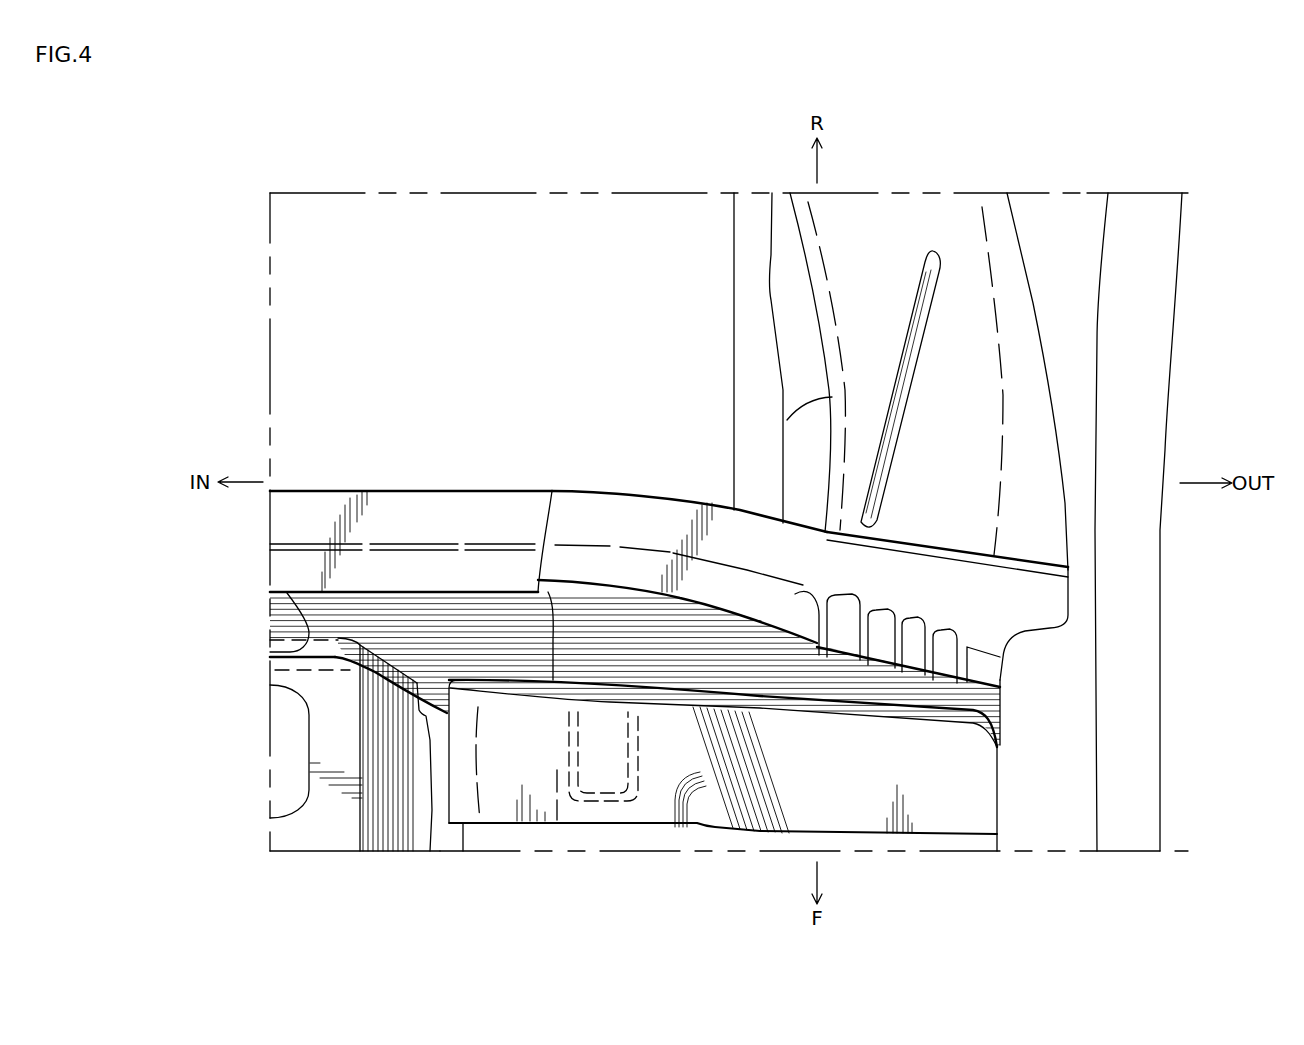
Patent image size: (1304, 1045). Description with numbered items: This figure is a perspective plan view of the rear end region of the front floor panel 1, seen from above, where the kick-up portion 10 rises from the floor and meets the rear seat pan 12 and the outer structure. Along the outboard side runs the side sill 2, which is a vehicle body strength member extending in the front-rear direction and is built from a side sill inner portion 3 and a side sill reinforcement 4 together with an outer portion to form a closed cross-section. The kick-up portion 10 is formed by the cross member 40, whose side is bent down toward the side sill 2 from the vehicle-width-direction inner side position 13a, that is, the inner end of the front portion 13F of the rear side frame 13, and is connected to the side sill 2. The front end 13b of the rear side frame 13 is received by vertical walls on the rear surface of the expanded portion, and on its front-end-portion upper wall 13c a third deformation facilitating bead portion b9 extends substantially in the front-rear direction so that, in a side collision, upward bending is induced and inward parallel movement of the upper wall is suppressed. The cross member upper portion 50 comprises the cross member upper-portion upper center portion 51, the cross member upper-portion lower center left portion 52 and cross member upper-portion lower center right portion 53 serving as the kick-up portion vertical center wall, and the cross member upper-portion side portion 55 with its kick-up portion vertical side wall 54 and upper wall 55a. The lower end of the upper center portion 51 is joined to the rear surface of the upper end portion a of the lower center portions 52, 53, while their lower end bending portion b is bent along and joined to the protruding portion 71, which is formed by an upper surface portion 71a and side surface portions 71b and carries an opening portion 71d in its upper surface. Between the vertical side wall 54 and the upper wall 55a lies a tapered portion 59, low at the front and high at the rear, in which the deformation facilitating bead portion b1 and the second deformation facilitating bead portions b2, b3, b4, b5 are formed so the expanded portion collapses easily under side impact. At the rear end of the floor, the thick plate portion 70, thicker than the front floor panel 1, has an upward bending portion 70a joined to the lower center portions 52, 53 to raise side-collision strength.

The front floor panel 1 is at (588, 845).
The side sill 2 is at (1183, 750).
The side sill inner portion 3 is at (1068, 697).
The side sill reinforcement 4 is at (1145, 412).
The kick-up portion 10 is at (669, 542).
The rear seat pan 12 is at (475, 298).
The rear side frame 13 is at (857, 350).
The front portion of rear side frame 13F is at (850, 343).
The vehicle-width-direction inner side position 13a is at (827, 480).
The front end of rear side frame 13b is at (921, 530).
The front-end-portion upper wall 13c is at (938, 349).
The third deformation facilitating bead portion b9 is at (897, 418).
The cross member 40 is at (409, 480).
The cross member upper portion 50 is at (411, 496).
The cross member upper-portion upper center portion 51 is at (302, 505).
The cross member upper-portion lower center left portion 52 is at (449, 595).
The cross member upper-portion lower center right portion 53 is at (280, 620).
The kick-up portion vertical side wall 54 is at (594, 641).
The cross member upper-portion side portion 55 is at (619, 496).
The upper wall 55a is at (915, 562).
The upper end portion a is at (397, 600).
The lower end bending portion b is at (433, 595).
The deformation facilitating bead portion b1 is at (818, 620).
The second deformation facilitating bead portion b2 is at (860, 620).
The second deformation facilitating bead portion b3 is at (897, 637).
The second deformation facilitating bead portion b4 is at (925, 640).
The second deformation facilitating bead portion b5 is at (953, 650).
The tapered portion 59 is at (843, 645).
The thick plate portion 70 is at (796, 786).
The bending portion 70a is at (527, 696).
The protruding portion 71 is at (325, 771).
The upper surface portion 71a is at (320, 840).
The side surface portion 71b is at (390, 840).
The opening portion 71d is at (309, 748).